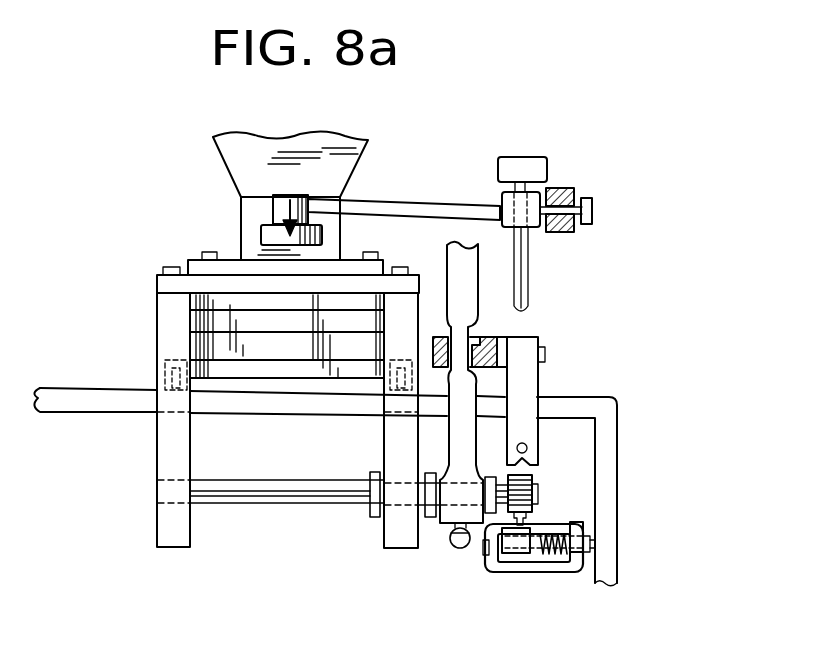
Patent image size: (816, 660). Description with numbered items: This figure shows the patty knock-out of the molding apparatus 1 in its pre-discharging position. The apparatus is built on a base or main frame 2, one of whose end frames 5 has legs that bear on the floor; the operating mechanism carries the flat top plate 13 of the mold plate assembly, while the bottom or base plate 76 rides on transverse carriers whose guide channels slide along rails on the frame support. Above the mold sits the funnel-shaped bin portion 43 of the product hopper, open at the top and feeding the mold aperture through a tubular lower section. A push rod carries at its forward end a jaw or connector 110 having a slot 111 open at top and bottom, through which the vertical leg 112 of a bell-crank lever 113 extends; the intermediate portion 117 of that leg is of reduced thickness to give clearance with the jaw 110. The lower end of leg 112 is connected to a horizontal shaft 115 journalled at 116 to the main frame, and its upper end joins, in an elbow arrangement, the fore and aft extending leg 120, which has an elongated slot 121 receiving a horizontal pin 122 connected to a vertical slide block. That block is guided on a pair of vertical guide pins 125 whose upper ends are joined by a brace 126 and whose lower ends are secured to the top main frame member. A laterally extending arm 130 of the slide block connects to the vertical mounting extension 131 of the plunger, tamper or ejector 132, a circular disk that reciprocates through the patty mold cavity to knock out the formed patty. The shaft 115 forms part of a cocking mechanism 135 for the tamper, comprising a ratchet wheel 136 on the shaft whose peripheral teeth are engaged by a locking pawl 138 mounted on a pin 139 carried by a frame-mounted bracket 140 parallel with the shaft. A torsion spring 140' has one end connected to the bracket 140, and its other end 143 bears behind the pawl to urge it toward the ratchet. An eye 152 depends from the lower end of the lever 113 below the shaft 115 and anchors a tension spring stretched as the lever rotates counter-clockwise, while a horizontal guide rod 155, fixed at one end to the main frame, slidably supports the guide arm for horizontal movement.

The molding apparatus 1 is at (620, 398).
The base or main frame 2 is at (156, 542).
The end frame 5 is at (622, 569).
The flat top plate 13 is at (190, 262).
The funnel-shaped bin portion 43 is at (248, 143).
The bottom or base plate 76 is at (213, 348).
The jaw or connector 110 is at (436, 337).
The slot 111 is at (473, 330).
The vertical leg 112 is at (462, 428).
The bell-crank lever 113 is at (486, 267).
The horizontal shaft 115 is at (220, 492).
The journal 116 is at (170, 480).
The intermediate portion 117 is at (462, 352).
The fore and aft extending leg 120 is at (572, 190).
The elongated slot 121 is at (571, 232).
The horizontal pin 122 is at (592, 210).
The vertical guide pins 125 is at (530, 291).
The brace 126 is at (523, 165).
The laterally extending arm 130 is at (402, 212).
The vertical mounting extension 131 is at (300, 195).
The plunger, tamper or ejector 132 is at (262, 230).
The cocking mechanism 135 is at (546, 491).
The ratchet wheel 136 is at (527, 446).
The locking pawl 138 is at (530, 515).
The pin 139 is at (590, 546).
The bracket 140 is at (534, 577).
The torsion spring 140' is at (591, 594).
The spring end 143 is at (498, 530).
The eye 152 is at (447, 548).
The horizontal guide rod 155 is at (548, 478).